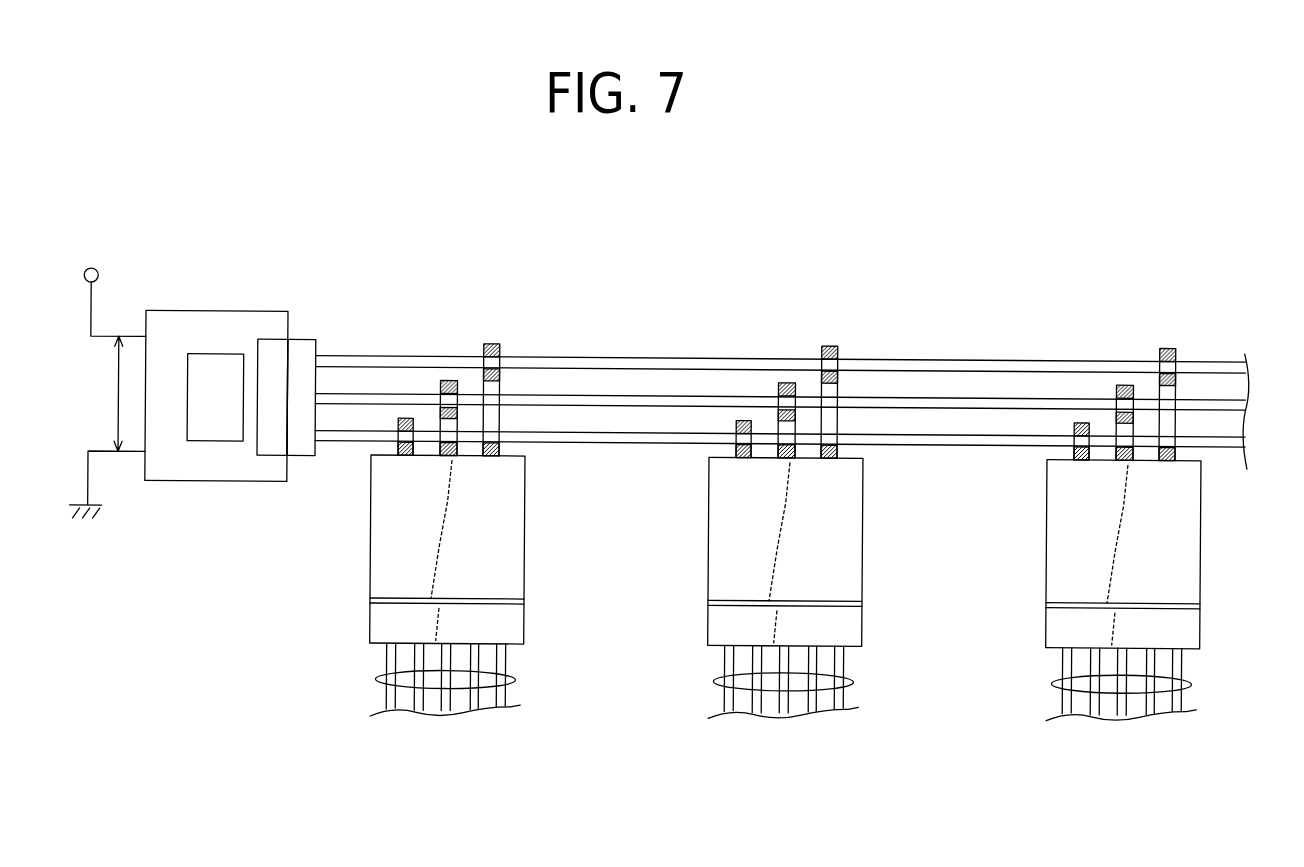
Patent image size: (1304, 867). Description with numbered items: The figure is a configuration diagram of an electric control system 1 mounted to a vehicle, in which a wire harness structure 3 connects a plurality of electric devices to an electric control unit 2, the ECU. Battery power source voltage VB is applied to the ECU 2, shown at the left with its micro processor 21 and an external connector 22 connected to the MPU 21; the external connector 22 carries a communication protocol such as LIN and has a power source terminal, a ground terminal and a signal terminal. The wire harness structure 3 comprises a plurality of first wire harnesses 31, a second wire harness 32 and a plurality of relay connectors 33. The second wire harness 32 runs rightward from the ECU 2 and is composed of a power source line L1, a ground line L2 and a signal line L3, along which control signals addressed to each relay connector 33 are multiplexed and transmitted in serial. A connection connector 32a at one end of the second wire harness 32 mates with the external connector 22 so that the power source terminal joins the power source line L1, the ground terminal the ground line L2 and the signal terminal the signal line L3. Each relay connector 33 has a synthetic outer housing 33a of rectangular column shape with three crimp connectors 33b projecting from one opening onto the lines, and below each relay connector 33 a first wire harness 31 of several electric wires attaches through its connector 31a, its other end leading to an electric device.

The electric control system 1 is at (1009, 258).
The electric control unit 2 is at (210, 312).
The micro processor 21 is at (203, 355).
The external connector 22 is at (270, 340).
The connection connector 32a is at (302, 341).
The second wire harness 32 is at (782, 358).
The power source line L1 is at (578, 366).
The ground line L2 is at (625, 404).
The signal line L3 is at (684, 441).
The relay connector 33 is at (527, 500).
The outer housing 33a is at (390, 543).
The connector 31a is at (390, 620).
The crimp connectors 33b is at (490, 343).
The first wire harness 31 is at (377, 679).
The wire harness structure 3 is at (145, 717).
The power source voltage VB is at (118, 393).